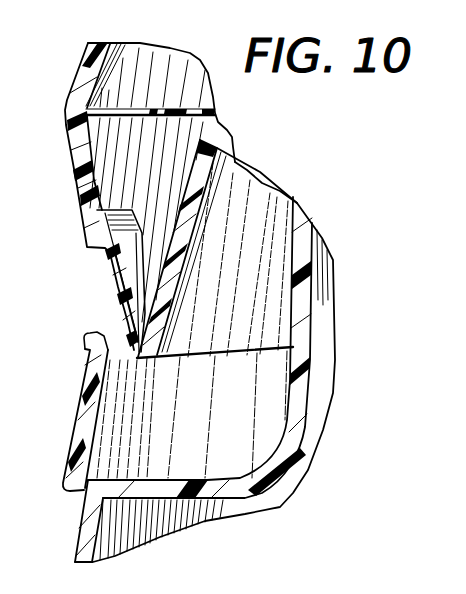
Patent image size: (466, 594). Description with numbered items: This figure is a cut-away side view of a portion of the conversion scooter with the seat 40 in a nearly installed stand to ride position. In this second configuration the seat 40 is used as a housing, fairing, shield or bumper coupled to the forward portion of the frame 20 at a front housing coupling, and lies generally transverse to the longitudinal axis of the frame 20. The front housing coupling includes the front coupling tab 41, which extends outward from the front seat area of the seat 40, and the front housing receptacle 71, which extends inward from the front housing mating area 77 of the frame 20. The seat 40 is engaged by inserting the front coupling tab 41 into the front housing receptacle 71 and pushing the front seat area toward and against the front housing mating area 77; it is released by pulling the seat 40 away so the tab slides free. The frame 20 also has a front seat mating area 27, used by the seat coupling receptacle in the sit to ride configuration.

The frame 20 is at (227, 462).
The front seat mating area 27 is at (100, 252).
The seat 40 is at (112, 90).
The front coupling tab 41 is at (130, 335).
The front housing receptacle 71 is at (137, 363).
The front housing mating area 77 is at (84, 336).